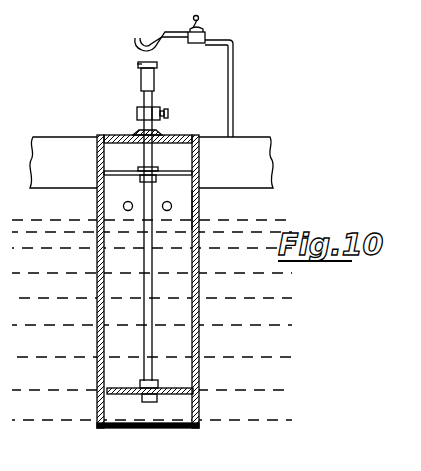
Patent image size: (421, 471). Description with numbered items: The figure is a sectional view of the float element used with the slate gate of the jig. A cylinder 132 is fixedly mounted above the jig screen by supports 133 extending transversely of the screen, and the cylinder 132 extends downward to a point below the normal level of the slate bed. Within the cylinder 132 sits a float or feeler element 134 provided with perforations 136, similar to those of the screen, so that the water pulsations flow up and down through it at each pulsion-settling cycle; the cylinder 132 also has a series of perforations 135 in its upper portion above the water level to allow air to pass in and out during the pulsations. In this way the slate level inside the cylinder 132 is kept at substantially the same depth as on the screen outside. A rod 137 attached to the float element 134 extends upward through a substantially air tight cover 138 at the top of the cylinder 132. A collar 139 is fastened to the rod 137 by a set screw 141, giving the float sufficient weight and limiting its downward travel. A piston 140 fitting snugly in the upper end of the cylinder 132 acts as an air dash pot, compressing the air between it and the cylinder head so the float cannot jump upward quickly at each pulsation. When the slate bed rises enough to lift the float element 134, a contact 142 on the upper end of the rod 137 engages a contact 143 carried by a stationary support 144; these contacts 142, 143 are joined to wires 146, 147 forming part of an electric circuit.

The cylinder 132 is at (198, 338).
The supports 133 is at (267, 136).
The float or feeler element 134 is at (168, 396).
The perforations 135 is at (197, 207).
The perforations 136 is at (123, 388).
The rod 137 is at (148, 342).
The cover 138 is at (125, 133).
The collar 139 is at (137, 110).
The piston 140 is at (117, 176).
The set screw 141 is at (168, 111).
The contact 142 is at (138, 63).
The contact 143 is at (153, 43).
The stationary support 144 is at (233, 78).
The wire 146 is at (95, 74).
The wire 147 is at (199, 16).